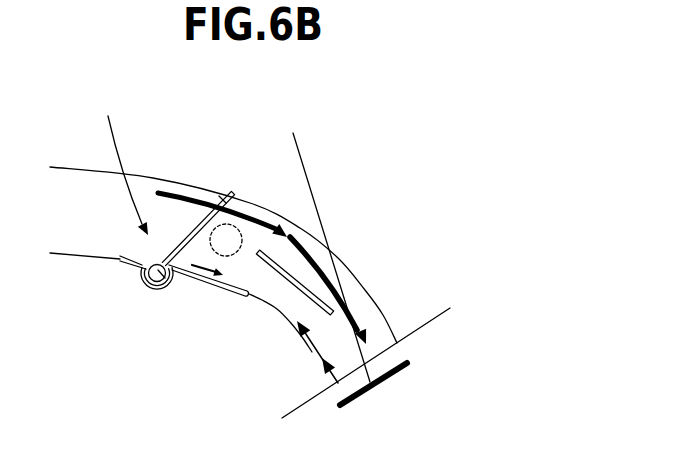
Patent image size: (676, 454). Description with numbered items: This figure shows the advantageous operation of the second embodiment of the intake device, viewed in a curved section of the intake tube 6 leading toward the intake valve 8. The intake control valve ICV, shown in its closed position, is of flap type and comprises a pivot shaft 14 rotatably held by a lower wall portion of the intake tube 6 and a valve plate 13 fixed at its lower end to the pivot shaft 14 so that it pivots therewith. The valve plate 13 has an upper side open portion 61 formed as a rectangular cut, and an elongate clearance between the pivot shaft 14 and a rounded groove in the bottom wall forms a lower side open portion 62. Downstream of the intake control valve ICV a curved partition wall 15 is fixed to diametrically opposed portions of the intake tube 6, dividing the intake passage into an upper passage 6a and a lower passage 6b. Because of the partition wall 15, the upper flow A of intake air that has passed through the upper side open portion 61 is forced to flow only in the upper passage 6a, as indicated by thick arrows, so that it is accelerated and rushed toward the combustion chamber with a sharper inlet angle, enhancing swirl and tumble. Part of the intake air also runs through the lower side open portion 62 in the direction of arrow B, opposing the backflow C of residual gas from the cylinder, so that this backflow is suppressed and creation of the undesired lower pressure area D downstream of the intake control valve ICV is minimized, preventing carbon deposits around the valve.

The intake tube 6 is at (150, 176).
The upper passage 6a is at (314, 266).
The lower passage 6b is at (290, 303).
The intake valve 8 is at (315, 200).
The valve plate 13 is at (193, 226).
The pivot shaft 14 is at (166, 285).
The partition wall 15 is at (283, 273).
The upper side open portion 61 is at (222, 194).
The lower side open portion 62 is at (155, 289).
The upper intake air flow A is at (252, 203).
The intake air flow through lower side open portion B is at (123, 259).
The backflow of residual gas C is at (300, 350).
The lower pressure area D is at (236, 252).
The intake control valve ICV is at (119, 166).